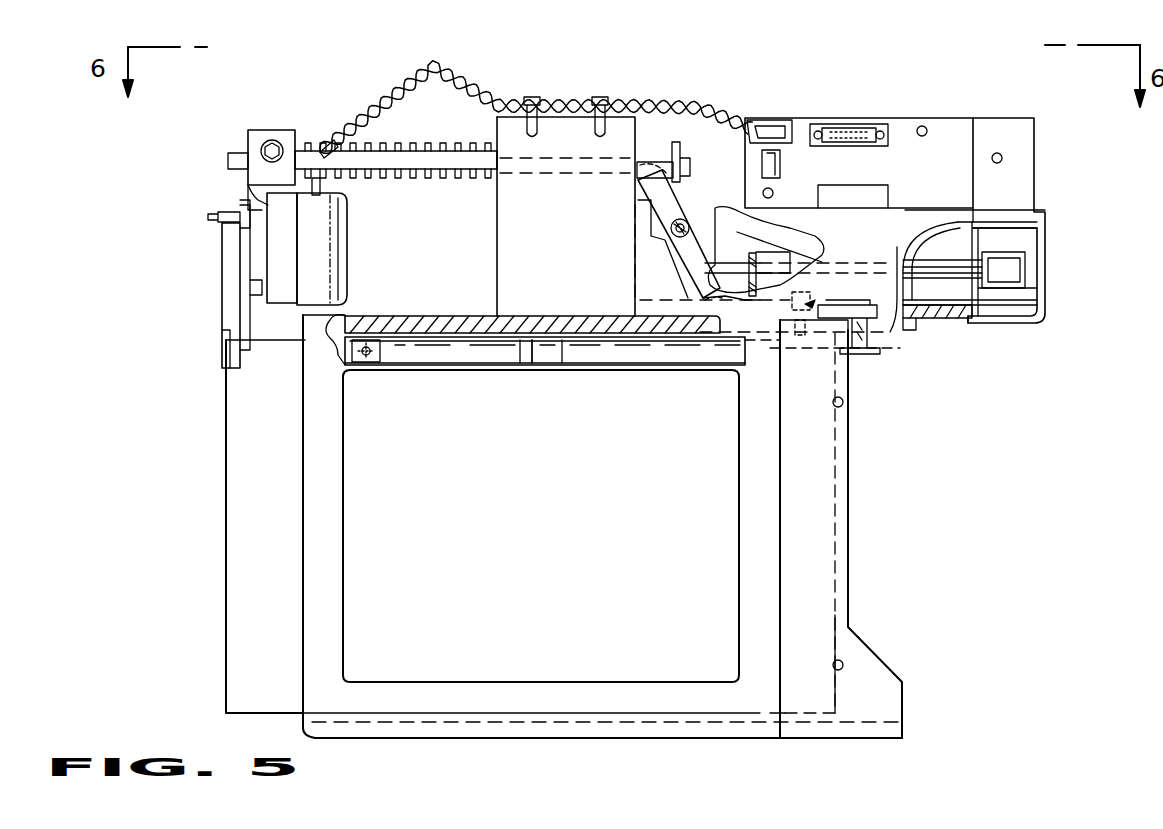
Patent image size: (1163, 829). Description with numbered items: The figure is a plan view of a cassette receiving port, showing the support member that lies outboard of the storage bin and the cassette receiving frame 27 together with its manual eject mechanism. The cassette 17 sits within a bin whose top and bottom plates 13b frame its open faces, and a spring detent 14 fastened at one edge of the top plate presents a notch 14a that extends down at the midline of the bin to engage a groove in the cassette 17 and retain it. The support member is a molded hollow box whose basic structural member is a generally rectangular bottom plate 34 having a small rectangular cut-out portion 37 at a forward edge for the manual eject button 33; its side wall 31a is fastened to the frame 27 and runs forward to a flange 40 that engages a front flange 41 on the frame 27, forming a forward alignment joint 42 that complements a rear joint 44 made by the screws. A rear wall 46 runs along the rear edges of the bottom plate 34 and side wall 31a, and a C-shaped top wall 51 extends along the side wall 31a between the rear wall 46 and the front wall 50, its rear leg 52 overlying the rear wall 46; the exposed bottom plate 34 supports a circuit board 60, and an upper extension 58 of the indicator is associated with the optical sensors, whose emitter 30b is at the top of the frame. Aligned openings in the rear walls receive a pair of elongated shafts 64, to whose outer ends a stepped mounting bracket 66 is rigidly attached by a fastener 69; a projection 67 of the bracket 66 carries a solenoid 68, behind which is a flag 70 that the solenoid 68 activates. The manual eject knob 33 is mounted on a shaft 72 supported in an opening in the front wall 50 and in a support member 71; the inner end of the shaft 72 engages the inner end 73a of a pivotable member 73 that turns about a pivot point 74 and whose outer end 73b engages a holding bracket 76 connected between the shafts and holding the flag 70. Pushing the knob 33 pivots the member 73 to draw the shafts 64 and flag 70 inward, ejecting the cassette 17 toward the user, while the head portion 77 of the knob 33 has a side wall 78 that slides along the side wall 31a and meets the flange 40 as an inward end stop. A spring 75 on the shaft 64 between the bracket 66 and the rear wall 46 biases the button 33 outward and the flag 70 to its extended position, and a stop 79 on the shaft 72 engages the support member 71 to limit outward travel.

The top and bottom plate 13b is at (338, 473).
The spring detent 14 is at (628, 365).
The notch 14a is at (548, 365).
The cassette 17 is at (280, 519).
The cassette receiving frame 27 is at (818, 519).
The emitter 30b is at (896, 330).
The side wall 31a is at (516, 316).
The manual eject button 33 is at (1068, 263).
The bottom plate 34 is at (801, 128).
The cut-out portion 37 is at (993, 311).
The flange 40 is at (917, 319).
The front flange 41 is at (906, 331).
The forward alignment joint 42 is at (895, 270).
The rear joint 44 is at (812, 303).
The rear wall 46 is at (497, 272).
The front wall 50 is at (1037, 181).
The top wall 51 is at (575, 258).
The rear leg 52 is at (497, 241).
The upper extension 58 is at (1030, 126).
The circuit board 60 is at (952, 122).
The elongated shaft 64 is at (326, 152).
The mounting bracket 66 is at (258, 185).
The projection 67 is at (256, 232).
The solenoid 68 is at (325, 280).
The fastener 69 is at (262, 150).
The flag 70 is at (232, 316).
The support member 71 is at (760, 293).
The shaft 72 is at (948, 272).
The pivotable member 73 is at (692, 197).
The inner end 73a is at (690, 261).
The outer end 73b is at (652, 181).
The pivot point 74 is at (668, 231).
The spring 75 is at (385, 185).
The holding bracket 76 is at (682, 161).
The head portion 77 is at (1045, 302).
The side wall 78 is at (1025, 324).
The stop 79 is at (760, 213).